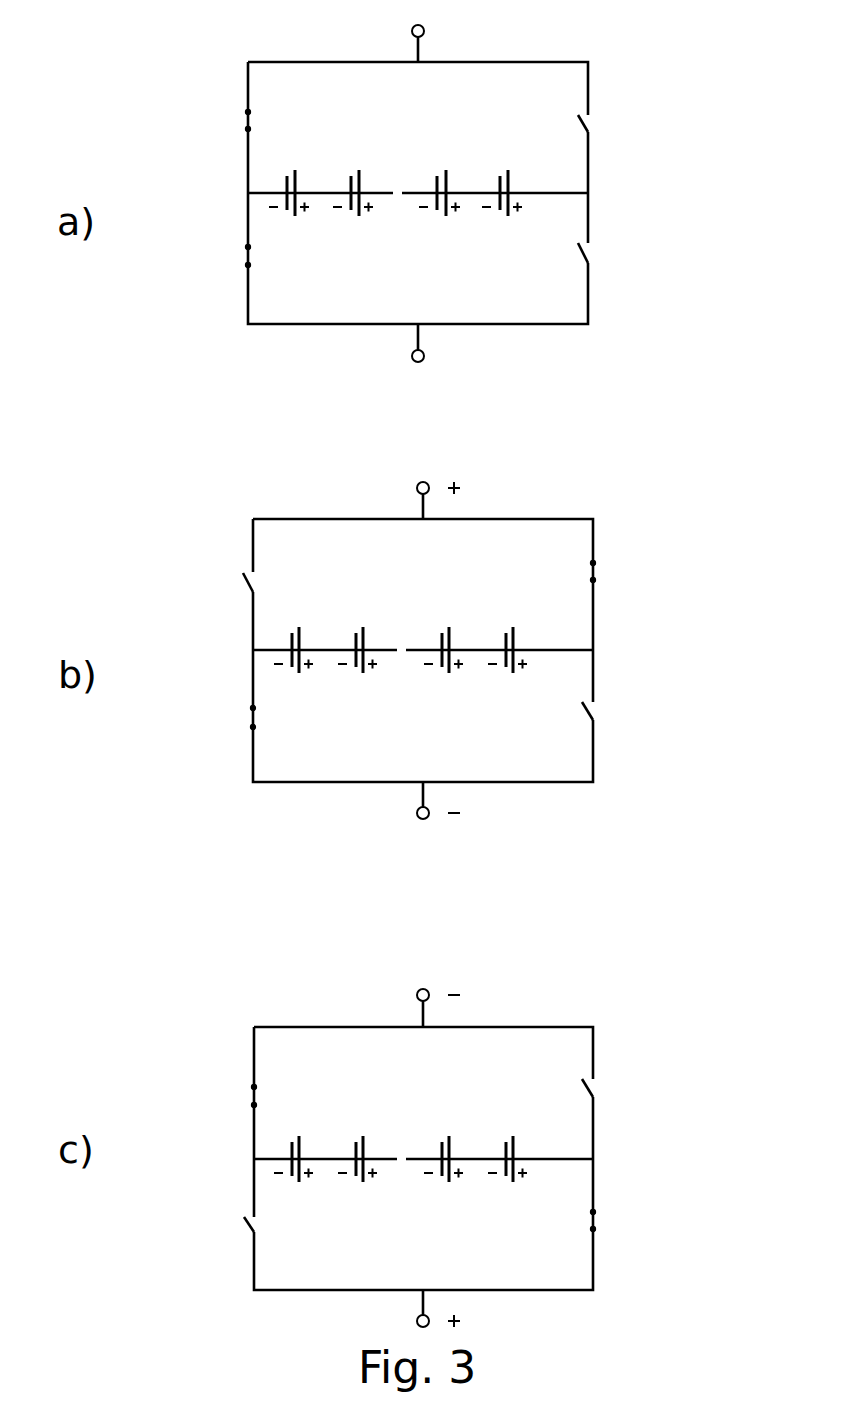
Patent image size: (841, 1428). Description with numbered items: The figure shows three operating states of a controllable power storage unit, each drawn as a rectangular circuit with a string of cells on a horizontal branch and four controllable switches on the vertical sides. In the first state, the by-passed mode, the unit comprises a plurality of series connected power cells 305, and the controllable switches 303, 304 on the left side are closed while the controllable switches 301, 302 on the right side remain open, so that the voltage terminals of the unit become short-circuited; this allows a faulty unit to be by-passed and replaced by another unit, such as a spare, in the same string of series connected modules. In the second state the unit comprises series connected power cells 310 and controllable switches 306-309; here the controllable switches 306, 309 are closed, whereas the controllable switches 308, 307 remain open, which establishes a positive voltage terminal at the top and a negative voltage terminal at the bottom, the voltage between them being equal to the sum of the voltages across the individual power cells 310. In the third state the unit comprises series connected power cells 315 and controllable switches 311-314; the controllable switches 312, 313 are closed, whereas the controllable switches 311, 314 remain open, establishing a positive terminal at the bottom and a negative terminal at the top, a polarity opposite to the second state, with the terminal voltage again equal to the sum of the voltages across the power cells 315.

The controllable switch 301 is at (588, 121).
The controllable switch 302 is at (588, 253).
The controllable switch 303 is at (248, 121).
The controllable switch 304 is at (248, 256).
The series connected power cells 305 is at (273, 222).
The controllable switch 306 is at (593, 572).
The controllable switch 307 is at (593, 707).
The controllable switch 308 is at (253, 583).
The controllable switch 309 is at (253, 717).
The series connected power cells 310 is at (528, 679).
The controllable switch 311 is at (593, 1085).
The controllable switch 312 is at (593, 1220).
The controllable switch 313 is at (254, 1097).
The controllable switch 314 is at (254, 1230).
The series connected power cells 315 is at (528, 1186).